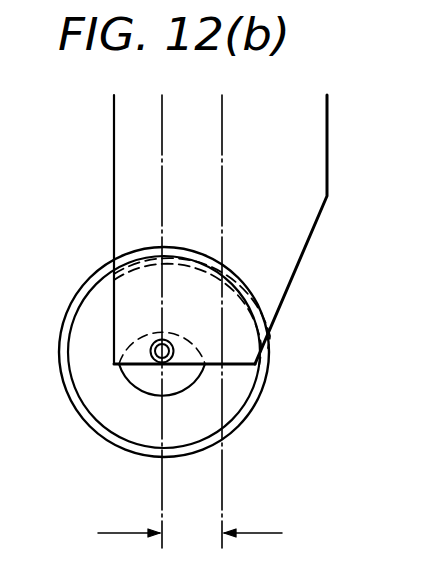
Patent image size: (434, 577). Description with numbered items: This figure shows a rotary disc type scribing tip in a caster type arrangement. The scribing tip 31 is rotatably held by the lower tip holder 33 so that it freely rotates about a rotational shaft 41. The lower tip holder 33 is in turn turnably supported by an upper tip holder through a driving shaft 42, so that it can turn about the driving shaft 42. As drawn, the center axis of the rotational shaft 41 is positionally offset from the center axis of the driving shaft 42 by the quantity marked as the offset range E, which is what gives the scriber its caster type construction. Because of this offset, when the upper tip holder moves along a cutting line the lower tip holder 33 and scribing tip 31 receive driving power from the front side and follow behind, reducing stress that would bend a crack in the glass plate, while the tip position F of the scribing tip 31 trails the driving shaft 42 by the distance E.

The scribing tip 31 is at (76, 297).
The lower tip holder 33 is at (329, 114).
The rotational shaft 41 is at (150, 351).
The driving shaft 42 is at (223, 503).
The tip position F is at (162, 457).
The offset range E is at (190, 534).